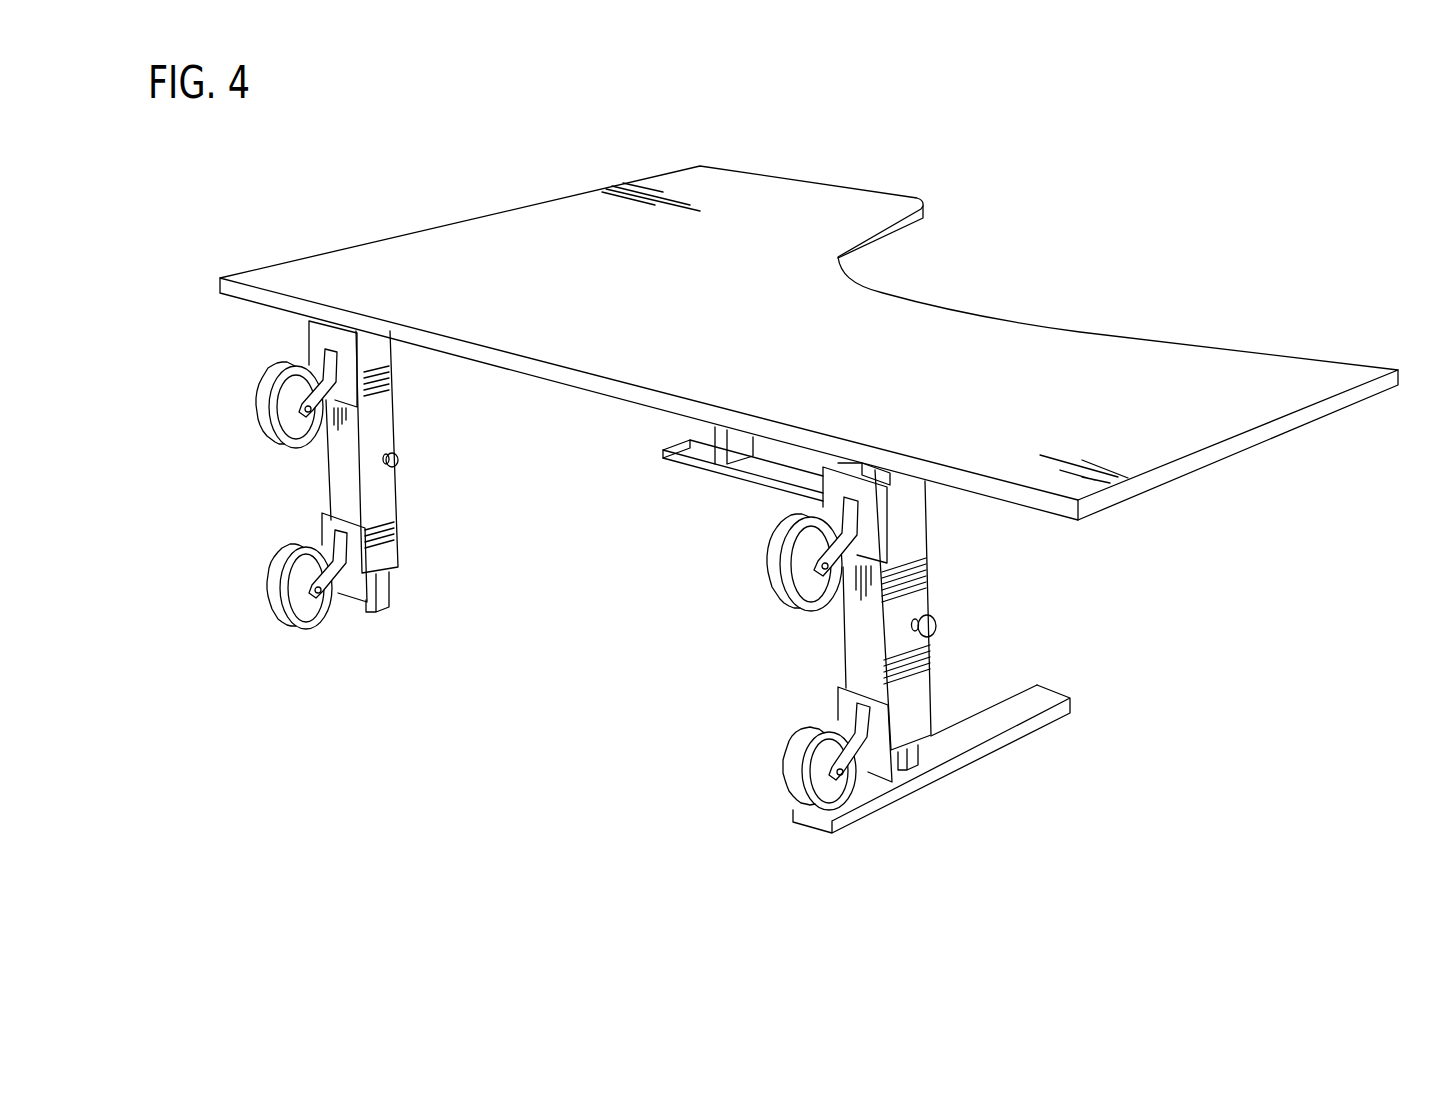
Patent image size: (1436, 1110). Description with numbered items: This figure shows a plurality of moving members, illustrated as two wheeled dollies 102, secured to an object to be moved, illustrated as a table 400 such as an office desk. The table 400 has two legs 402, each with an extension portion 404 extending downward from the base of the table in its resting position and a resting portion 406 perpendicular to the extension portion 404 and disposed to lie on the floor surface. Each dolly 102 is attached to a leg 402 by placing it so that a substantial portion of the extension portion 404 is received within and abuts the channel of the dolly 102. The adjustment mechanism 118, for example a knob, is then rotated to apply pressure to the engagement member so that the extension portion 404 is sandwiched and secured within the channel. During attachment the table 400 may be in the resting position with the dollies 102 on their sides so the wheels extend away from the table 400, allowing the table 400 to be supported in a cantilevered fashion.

The table 400 is at (1116, 310).
The wheeled dolly 102 is at (314, 472).
The adjustment mechanism 118 is at (937, 625).
The leg 402 is at (372, 620).
The extension portion 404 is at (690, 444).
The resting portion 406 is at (1004, 700).